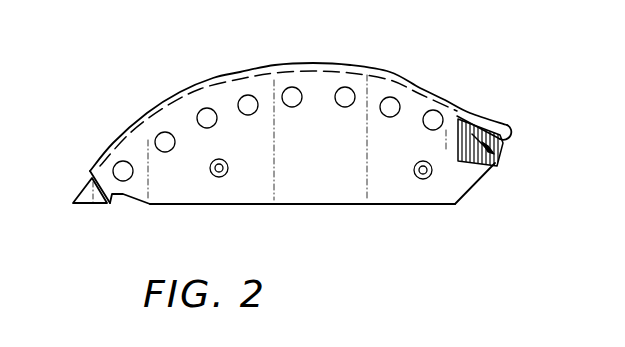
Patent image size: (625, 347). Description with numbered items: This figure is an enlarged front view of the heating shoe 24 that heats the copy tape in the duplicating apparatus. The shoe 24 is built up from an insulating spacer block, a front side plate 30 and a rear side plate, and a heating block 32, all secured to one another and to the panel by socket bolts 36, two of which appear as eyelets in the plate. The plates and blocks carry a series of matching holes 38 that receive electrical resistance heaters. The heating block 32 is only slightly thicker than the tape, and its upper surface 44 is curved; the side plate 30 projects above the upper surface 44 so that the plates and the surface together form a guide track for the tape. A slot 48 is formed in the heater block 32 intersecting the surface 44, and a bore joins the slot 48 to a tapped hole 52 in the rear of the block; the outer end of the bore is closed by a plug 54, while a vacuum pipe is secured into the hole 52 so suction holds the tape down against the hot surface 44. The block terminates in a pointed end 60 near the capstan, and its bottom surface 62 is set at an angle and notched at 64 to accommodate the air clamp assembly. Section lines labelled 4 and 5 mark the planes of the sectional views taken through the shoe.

The heating shoe 24 is at (224, 70).
The front side plate 30 is at (314, 163).
The heating block 32 is at (497, 160).
The socket bolts 36 is at (227, 169).
The apertures 38 is at (198, 112).
The upper surface 44 is at (405, 86).
The slot 48 is at (458, 118).
The tapped hole 52 is at (508, 128).
The plug 54 is at (500, 152).
The pointed end 60 is at (80, 204).
The bottom surface 62 is at (413, 205).
The notch 64 is at (123, 197).
The section line 4- 4 is at (300, 18).
The section line 5- 5 is at (505, 123).